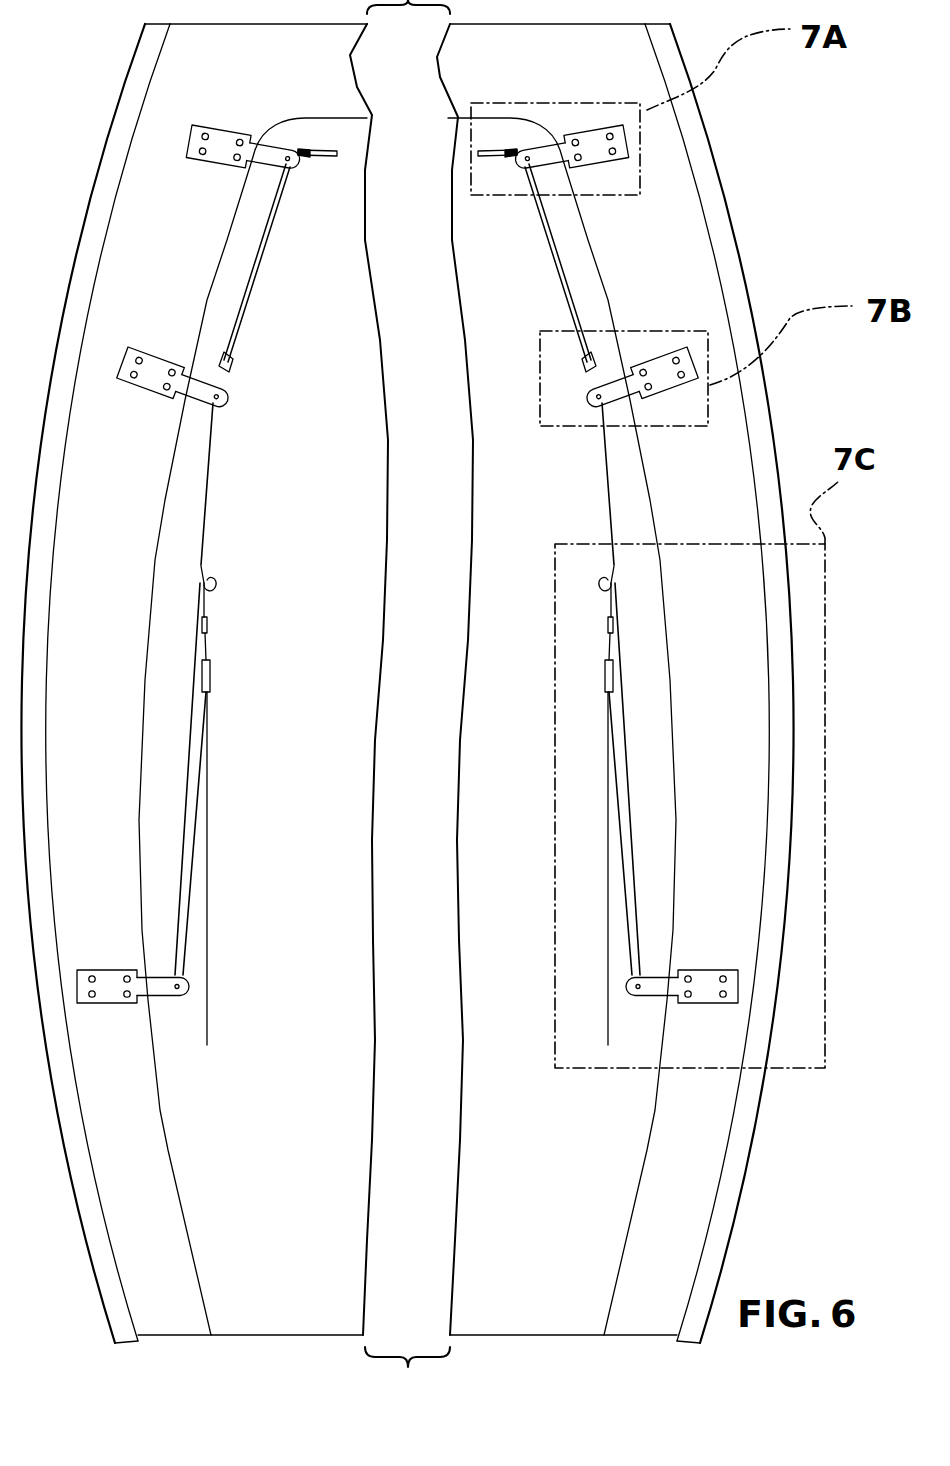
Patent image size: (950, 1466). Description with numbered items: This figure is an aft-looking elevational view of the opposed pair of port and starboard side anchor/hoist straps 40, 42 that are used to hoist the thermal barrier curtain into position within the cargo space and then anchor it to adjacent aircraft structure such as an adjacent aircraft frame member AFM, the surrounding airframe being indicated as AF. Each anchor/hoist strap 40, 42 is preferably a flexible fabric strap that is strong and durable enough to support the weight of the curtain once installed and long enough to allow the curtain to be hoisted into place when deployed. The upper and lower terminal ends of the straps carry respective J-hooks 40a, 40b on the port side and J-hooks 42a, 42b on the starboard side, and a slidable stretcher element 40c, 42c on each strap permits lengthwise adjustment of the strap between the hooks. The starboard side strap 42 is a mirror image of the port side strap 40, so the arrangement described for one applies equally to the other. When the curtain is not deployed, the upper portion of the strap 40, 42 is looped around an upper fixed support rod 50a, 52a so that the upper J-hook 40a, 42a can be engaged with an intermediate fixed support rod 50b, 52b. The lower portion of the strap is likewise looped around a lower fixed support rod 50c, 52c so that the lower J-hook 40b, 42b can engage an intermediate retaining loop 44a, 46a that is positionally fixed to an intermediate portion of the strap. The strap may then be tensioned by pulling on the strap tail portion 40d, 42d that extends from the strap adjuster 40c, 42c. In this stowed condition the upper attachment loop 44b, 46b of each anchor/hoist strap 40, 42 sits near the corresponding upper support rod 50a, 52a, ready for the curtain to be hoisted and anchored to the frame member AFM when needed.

The port side anchor/hoist strap 40 is at (604, 463).
The J-hook 40a is at (595, 380).
The J-hook 40b is at (617, 600).
The slidable stretcher element 40c is at (603, 677).
The strap tail portion 40d is at (608, 862).
The starboard side anchor/hoist strap 42 is at (216, 502).
The J-hook 42a is at (222, 372).
The J-hook 42b is at (200, 600).
The slidable stretcher element 42c is at (212, 677).
The strap tail portion 42d is at (207, 862).
The intermediate retaining loop 44a is at (610, 578).
The upper attachment loop 44b is at (492, 150).
The intermediate retaining loop 46a is at (203, 577).
The upper attachment loop 46b is at (322, 158).
The upper fixed support rod 50a is at (557, 142).
The intermediate fixed support rod 50b is at (630, 400).
The lower fixed support rod 50c is at (653, 988).
The upper fixed support rod 52a is at (255, 155).
The intermediate fixed support rod 52b is at (185, 400).
The lower fixed support rod 52c is at (113, 990).
The airframe AF is at (88, 1203).
The aircraft frame member AFM is at (189, 233).